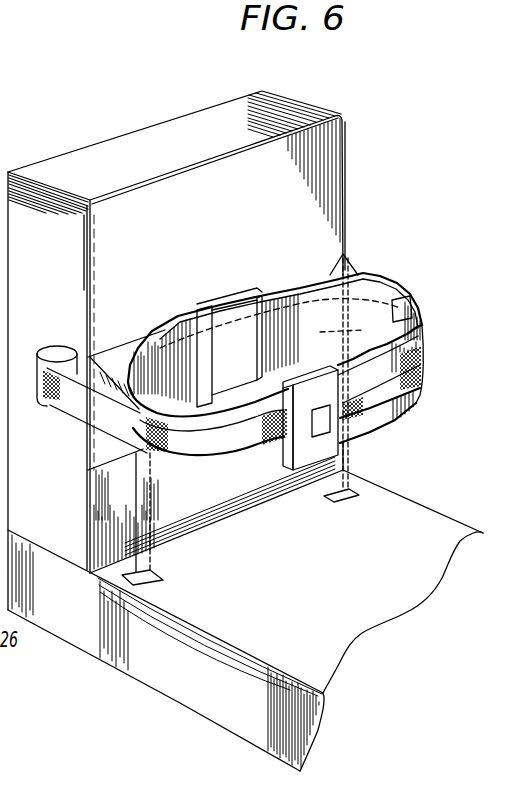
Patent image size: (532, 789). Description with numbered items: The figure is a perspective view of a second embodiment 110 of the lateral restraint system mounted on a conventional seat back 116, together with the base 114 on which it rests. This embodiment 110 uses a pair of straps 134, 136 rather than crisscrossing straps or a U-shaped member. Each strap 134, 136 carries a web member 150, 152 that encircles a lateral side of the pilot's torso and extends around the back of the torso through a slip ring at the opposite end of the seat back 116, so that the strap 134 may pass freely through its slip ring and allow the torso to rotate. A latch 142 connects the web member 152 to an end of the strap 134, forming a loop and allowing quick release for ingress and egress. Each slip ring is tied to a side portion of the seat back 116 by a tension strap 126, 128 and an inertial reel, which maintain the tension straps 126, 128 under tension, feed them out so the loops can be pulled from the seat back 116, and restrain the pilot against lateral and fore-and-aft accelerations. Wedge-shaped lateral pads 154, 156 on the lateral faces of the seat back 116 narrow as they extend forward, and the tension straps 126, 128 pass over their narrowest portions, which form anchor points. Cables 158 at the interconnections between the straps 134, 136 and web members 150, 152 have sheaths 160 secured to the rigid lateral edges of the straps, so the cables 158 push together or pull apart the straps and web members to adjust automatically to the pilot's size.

The lateral restraint system embodiment 110 is at (372, 161).
The base 114 is at (115, 669).
The seat back 116 is at (283, 112).
The tension strap 126 is at (403, 290).
The tension strap 128 is at (78, 408).
The strap 134 is at (0, 31).
The strap 136 is at (416, 396).
The latch 142 is at (321, 435).
The web member 150 is at (132, 446).
The web member 152 is at (412, 330).
The lateral pad 154 is at (336, 259).
The lateral pad 156 is at (110, 360).
The cable 158 is at (200, 306).
The sheath 160 is at (0, 136).